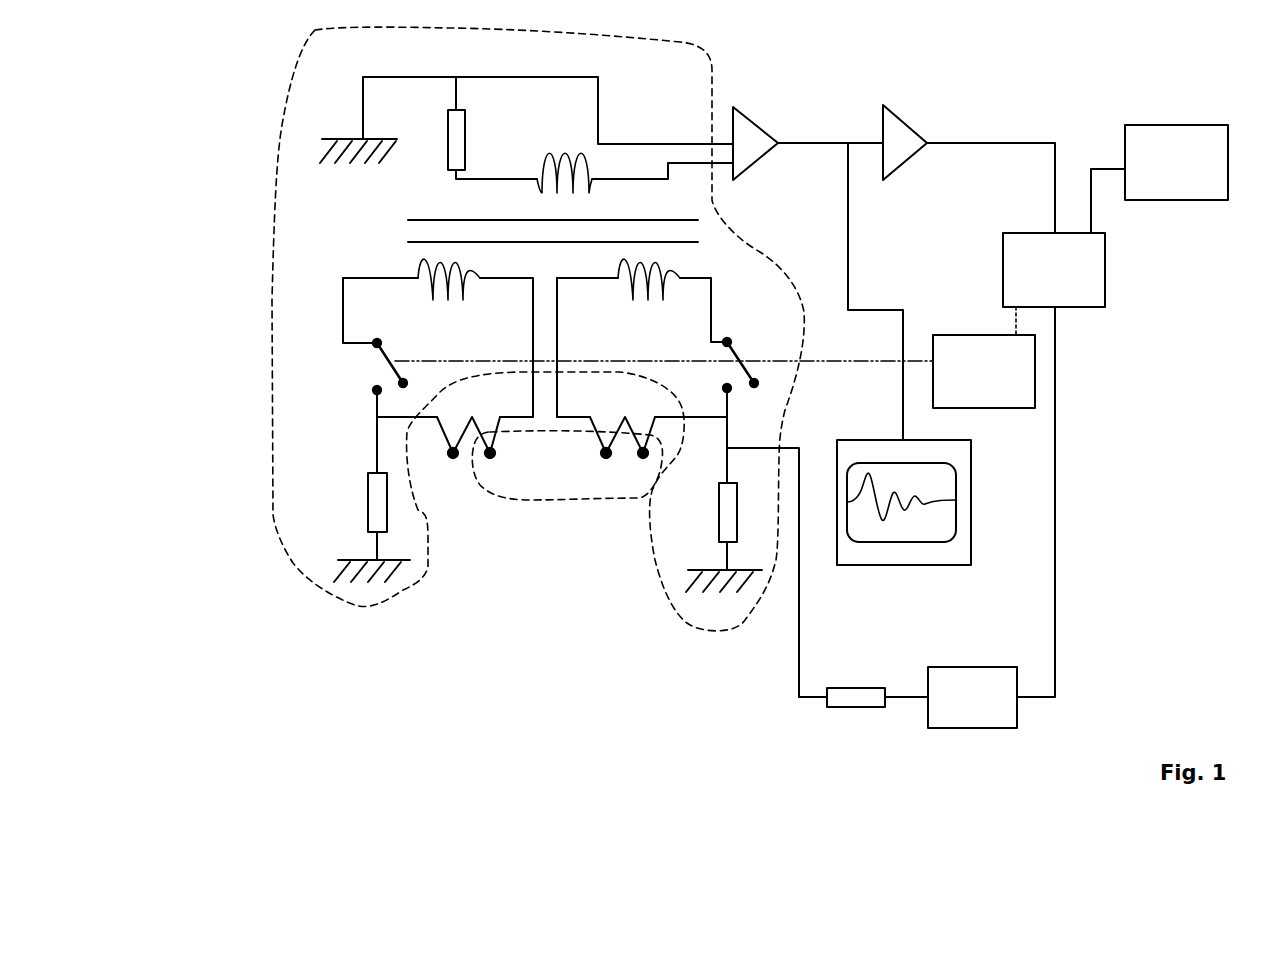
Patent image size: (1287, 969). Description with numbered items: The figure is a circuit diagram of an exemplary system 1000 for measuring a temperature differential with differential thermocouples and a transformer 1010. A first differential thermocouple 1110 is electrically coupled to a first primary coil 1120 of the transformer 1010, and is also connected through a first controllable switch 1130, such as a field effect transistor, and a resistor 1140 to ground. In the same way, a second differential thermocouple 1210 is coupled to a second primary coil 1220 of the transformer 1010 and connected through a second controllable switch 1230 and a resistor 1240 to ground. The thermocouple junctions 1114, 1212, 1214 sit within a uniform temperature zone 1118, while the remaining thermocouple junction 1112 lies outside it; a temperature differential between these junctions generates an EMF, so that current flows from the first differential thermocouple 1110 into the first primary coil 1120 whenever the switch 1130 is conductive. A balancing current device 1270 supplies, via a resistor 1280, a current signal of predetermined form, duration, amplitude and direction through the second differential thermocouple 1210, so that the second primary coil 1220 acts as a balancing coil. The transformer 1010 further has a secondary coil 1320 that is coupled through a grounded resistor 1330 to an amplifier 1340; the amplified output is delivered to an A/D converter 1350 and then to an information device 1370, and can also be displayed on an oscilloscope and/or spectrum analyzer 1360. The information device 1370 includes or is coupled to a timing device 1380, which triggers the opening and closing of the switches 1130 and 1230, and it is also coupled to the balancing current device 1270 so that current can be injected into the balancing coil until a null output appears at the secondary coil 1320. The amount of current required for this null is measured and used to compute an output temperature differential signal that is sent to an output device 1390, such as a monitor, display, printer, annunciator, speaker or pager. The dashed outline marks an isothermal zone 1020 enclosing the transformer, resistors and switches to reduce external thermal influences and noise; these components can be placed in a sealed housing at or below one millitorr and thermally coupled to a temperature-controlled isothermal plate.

The system 1000 is at (1212, 716).
The transformer 1010 is at (529, 231).
The isothermal zone 1020 is at (276, 168).
The first differential thermocouple 1110 is at (468, 418).
The thermocouple junction 1112 is at (449, 477).
The thermocouple junction 1114 is at (493, 468).
The uniform temperature zone 1118 is at (548, 508).
The first primary coil 1120 is at (449, 296).
The first controllable switch 1130 is at (367, 367).
The resistor 1140 is at (344, 502).
The second differential thermocouple 1210 is at (622, 418).
The thermocouple junction 1212 is at (600, 468).
The thermocouple junction 1214 is at (635, 477).
The second primary coil 1220 is at (649, 296).
The second controllable switch 1230 is at (759, 355).
The resistor 1240 is at (697, 512).
The balancing current device 1270 is at (972, 697).
The resistor 1280 is at (856, 683).
The secondary coil 1320 is at (593, 184).
The grounded resistor 1330 is at (488, 140).
The amplifier 1340 is at (765, 156).
The A/D converter 1350 is at (925, 151).
The oscilloscope and/or spectrum analyzer 1360 is at (917, 523).
The information device 1370 is at (1054, 270).
The timing device 1380 is at (984, 371).
The output device 1390 is at (1176, 162).